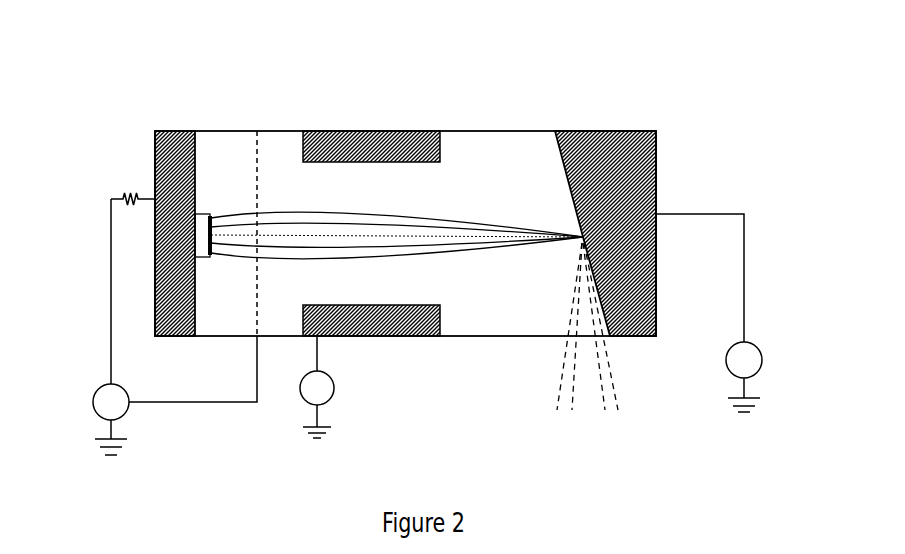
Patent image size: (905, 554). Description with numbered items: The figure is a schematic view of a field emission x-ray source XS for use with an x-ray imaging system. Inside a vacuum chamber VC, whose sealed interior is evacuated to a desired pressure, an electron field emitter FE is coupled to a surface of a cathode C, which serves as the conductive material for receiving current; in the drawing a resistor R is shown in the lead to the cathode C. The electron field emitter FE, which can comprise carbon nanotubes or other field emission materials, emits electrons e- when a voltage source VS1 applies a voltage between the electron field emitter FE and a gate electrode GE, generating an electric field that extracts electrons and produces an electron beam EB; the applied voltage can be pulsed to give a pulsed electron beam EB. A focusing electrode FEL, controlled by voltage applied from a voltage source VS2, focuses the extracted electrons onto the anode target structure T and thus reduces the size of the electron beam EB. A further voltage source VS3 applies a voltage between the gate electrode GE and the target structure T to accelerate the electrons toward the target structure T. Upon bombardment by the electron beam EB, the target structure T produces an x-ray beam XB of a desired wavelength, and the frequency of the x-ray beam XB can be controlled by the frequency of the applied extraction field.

The x-ray source XS is at (146, 93).
The vacuum chamber VC is at (511, 130).
The cathode C is at (195, 311).
The electron field emitter FE is at (211, 215).
The gate electrode GE is at (257, 313).
The focusing electrode FEL is at (322, 131).
The electron beam EB is at (439, 198).
The electrons e- is at (418, 206).
The anode target structure T is at (556, 141).
The x-ray beam XB is at (620, 386).
The resistor R is at (111, 196).
The voltage source VS1 is at (92, 401).
The voltage source VS2 is at (334, 385).
The voltage source VS3 is at (762, 360).